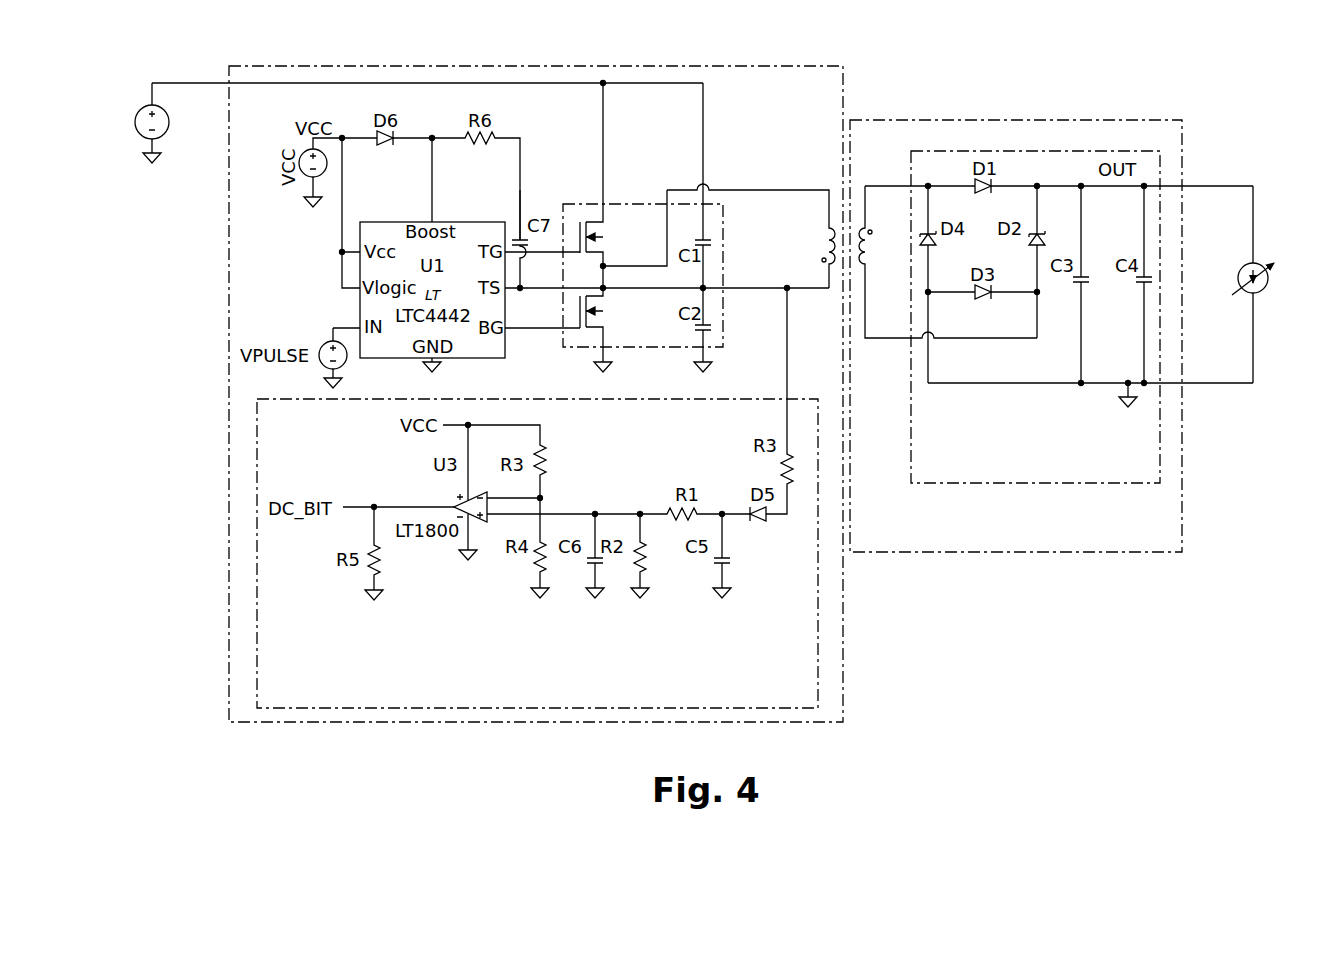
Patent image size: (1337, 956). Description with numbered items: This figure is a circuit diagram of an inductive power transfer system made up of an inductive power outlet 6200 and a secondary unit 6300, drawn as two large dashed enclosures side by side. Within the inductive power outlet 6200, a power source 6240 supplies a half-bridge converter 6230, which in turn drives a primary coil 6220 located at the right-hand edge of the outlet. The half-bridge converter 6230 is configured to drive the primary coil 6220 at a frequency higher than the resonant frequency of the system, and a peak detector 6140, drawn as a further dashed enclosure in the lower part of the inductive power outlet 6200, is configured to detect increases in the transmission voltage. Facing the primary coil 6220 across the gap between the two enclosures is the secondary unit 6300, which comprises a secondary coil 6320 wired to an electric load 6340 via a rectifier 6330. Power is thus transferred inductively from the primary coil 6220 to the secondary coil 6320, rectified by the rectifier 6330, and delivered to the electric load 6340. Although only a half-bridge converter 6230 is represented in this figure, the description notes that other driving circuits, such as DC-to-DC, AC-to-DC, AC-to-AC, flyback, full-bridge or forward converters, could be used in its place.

The inductive power outlet 6200 is at (271, 72).
The peak detector 6140 is at (266, 647).
The power source 6240 is at (134, 148).
The half-bridge converter 6230 is at (639, 197).
The primary coil 6220 is at (816, 205).
The secondary unit 6300 is at (1148, 114).
The secondary coil 6320 is at (878, 186).
The rectifier 6330 is at (986, 484).
The electric load 6340 is at (1271, 344).